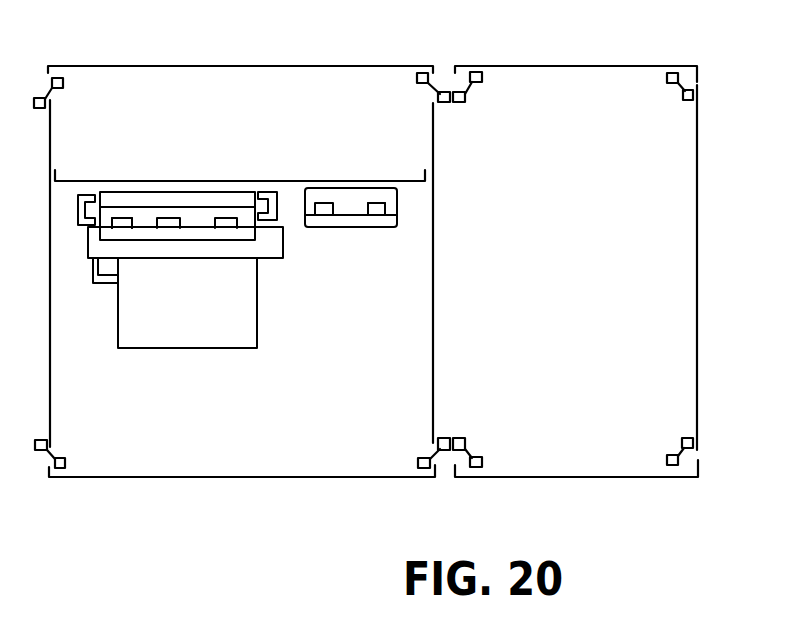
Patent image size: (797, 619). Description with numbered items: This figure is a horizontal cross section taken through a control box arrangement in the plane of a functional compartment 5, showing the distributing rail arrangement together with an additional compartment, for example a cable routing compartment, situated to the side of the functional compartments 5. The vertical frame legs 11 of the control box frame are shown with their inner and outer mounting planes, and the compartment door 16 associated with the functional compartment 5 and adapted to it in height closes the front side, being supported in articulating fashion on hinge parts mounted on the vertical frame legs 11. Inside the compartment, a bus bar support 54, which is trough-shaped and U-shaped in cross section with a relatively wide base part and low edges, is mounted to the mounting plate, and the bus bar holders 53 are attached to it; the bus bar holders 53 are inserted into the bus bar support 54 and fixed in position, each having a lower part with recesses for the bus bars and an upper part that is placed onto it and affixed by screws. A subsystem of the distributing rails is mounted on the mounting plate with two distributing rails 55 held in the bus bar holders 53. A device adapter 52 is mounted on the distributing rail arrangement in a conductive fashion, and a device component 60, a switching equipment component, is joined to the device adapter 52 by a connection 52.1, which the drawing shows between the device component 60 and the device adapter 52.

The functional compartment 5 is at (212, 453).
The vertical frame leg 11 is at (29, 98).
The compartment door 16 is at (345, 478).
The device adapter 52 is at (97, 247).
The connection 52.1 is at (110, 283).
The bus bar holder 53 is at (95, 211).
The bus bar support 54 is at (107, 208).
The distributing rail 55 is at (122, 218).
The device component 60 is at (200, 333).